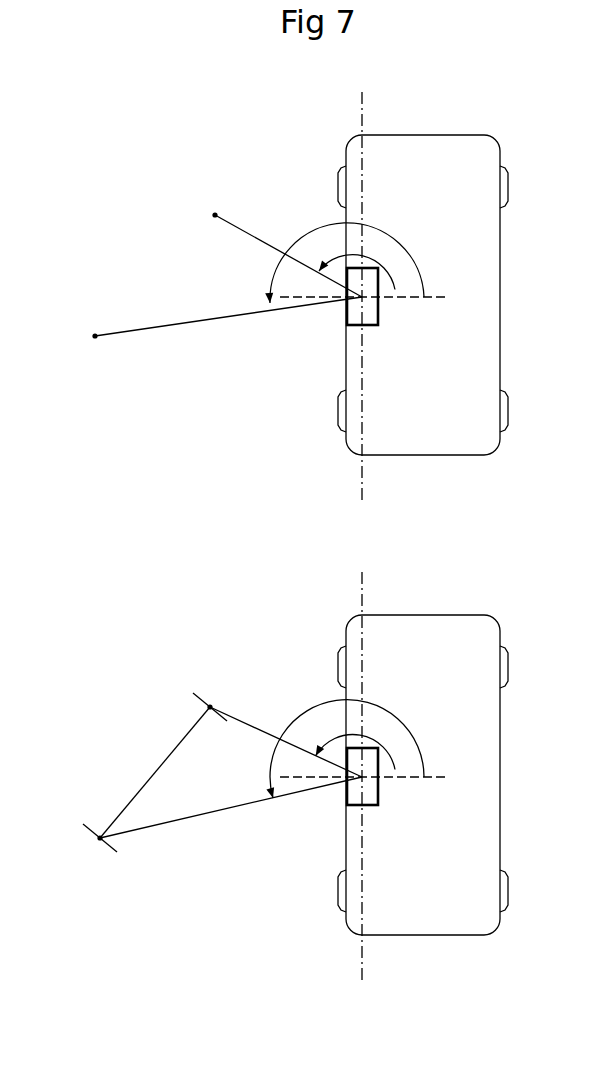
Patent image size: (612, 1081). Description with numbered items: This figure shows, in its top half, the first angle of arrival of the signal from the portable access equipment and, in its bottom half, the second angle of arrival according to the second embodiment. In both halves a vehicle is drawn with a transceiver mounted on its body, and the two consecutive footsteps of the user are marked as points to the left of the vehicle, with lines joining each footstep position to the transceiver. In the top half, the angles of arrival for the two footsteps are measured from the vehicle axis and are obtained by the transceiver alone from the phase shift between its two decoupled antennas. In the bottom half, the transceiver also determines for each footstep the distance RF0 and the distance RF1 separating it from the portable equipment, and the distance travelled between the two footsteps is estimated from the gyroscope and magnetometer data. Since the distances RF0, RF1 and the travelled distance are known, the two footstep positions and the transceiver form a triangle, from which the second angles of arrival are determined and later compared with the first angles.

The distance RF0 is at (231, 811).
The distance RF1 is at (286, 737).